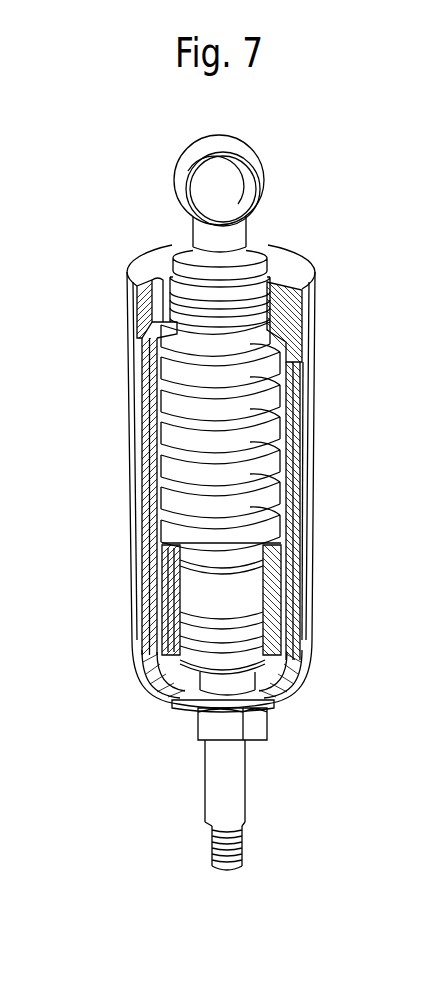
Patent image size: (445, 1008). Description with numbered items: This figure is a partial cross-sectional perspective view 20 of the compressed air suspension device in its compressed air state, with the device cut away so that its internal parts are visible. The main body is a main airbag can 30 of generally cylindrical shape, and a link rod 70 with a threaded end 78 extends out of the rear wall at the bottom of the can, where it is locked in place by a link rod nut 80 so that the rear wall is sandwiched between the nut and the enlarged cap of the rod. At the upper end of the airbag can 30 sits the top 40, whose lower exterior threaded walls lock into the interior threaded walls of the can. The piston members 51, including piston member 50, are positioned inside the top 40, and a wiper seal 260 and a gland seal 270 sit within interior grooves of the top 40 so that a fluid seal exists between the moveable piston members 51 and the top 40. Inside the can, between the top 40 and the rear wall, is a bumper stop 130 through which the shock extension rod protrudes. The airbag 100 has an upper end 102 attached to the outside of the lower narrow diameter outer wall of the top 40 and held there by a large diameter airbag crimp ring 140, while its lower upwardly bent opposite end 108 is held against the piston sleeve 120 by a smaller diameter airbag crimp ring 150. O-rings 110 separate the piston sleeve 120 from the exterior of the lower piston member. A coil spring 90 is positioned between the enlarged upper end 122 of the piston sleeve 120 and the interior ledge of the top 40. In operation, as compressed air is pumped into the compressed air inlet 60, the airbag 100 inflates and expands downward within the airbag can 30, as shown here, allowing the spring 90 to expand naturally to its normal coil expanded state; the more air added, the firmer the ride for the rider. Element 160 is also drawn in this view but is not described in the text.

The partial cross-sectional perspective view 20 is at (118, 122).
The main airbag can 30 is at (308, 403).
The top 40 is at (295, 268).
The piston member 50 is at (243, 149).
The piston members 51 is at (148, 196).
The compressed air inlet 60 is at (140, 262).
The link rod 70 is at (232, 793).
The threaded end 78 is at (215, 842).
The link rod nut 80 is at (248, 725).
The coil spring 90 is at (266, 365).
The airbag 100 is at (288, 455).
The upper end of airbag 102 is at (296, 378).
The lower upwardly bent opposite end of airbag 108 is at (282, 578).
The O-ring 110 is at (298, 618).
The piston sleeve 120 is at (152, 598).
The enlarged upper end of piston sleeve 122 is at (272, 545).
The bumper stop 130 is at (210, 678).
The large diameter airbag crimp ring 140 is at (143, 378).
The smaller diameter airbag crimp ring 150 is at (157, 570).
The bottom cap 160 is at (153, 665).
The wiper seal 260 is at (238, 290).
The gland seal 270 is at (263, 294).